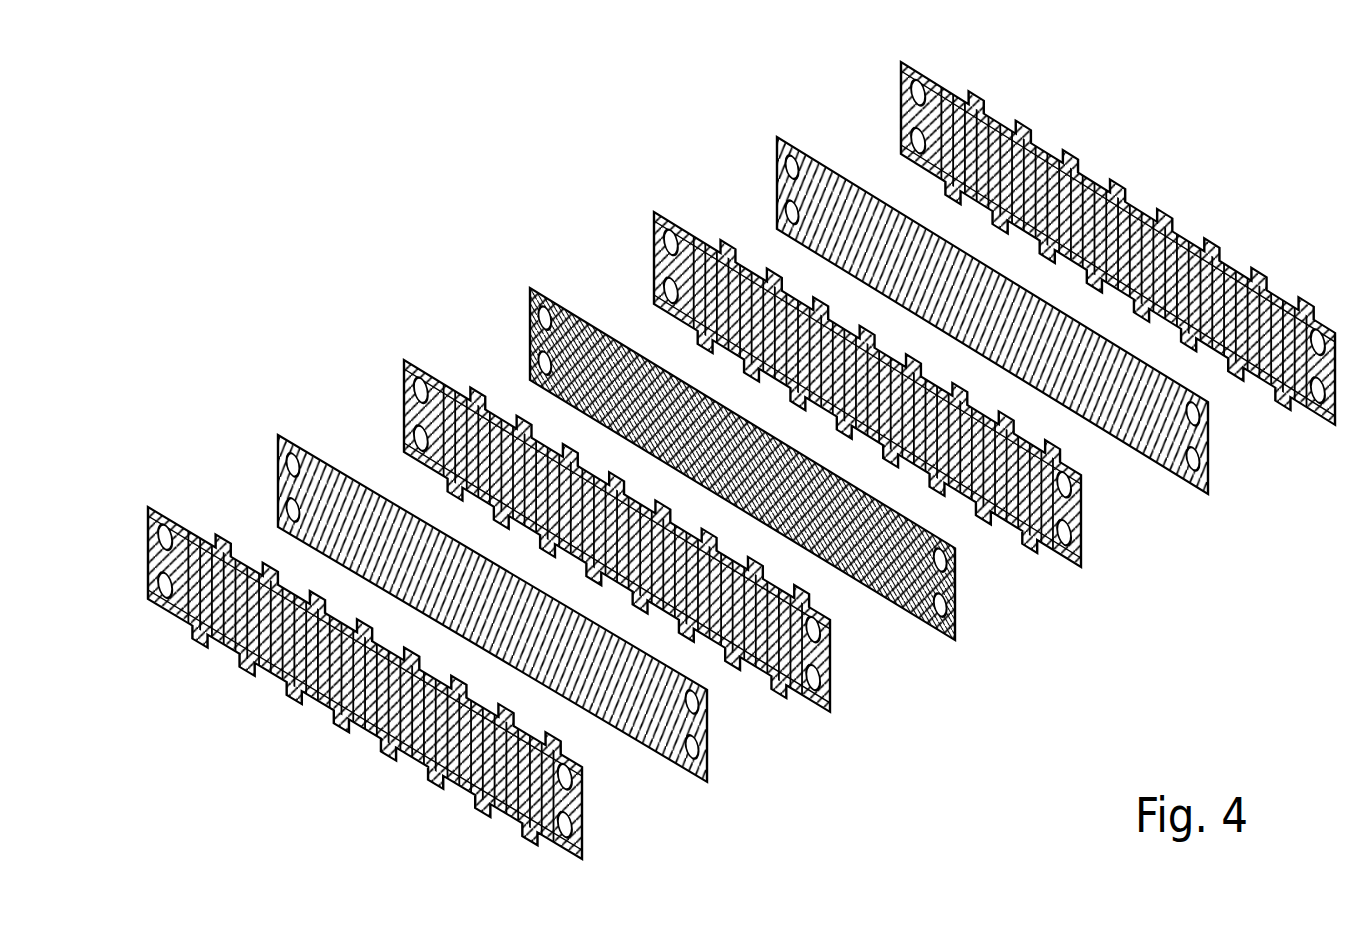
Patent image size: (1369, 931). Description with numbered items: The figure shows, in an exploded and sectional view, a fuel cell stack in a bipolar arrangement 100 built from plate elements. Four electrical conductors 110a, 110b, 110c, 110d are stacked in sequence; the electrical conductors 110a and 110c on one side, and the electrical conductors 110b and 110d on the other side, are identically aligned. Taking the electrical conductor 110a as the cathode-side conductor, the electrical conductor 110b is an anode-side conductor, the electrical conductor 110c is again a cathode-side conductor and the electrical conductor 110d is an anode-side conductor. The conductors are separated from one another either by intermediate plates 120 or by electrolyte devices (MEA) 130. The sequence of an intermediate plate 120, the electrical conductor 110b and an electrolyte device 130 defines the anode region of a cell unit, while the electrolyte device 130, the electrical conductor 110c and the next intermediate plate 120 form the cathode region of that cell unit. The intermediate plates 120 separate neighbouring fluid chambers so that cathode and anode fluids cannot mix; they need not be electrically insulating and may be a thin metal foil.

The bipolar arrangement 100 is at (412, 196).
The electrical conductor 110a is at (583, 825).
The electrical conductor 110b is at (832, 680).
The electrical conductor 110c is at (653, 245).
The electrical conductor 110d is at (900, 95).
The intermediate plate 120 is at (708, 755).
The electrolyte device (MEA) 130 is at (956, 605).